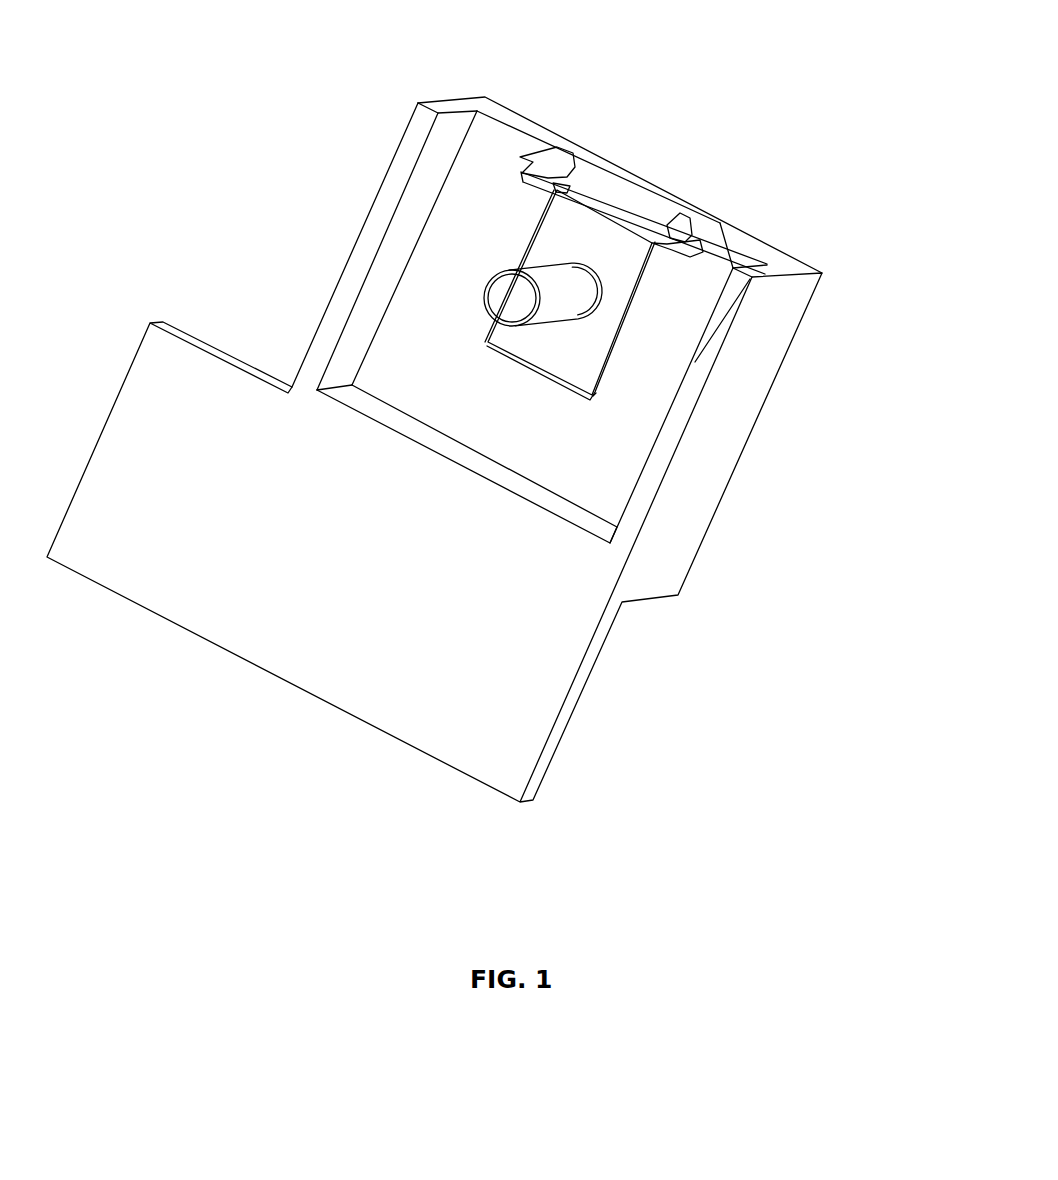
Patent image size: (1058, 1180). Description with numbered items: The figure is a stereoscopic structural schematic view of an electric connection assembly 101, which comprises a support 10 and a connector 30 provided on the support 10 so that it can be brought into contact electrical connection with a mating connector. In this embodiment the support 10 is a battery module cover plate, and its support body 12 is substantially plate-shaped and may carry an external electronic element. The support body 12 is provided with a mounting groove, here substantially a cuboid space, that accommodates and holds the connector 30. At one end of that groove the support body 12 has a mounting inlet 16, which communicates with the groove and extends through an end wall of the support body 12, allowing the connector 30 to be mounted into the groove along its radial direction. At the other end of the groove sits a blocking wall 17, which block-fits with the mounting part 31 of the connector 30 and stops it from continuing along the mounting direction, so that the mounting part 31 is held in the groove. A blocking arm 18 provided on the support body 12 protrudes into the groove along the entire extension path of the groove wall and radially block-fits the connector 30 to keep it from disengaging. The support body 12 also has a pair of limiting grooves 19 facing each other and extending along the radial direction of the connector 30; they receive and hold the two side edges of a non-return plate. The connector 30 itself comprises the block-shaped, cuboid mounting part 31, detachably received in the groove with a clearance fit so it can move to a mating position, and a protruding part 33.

The electric connection assembly 101 is at (406, 63).
The support 10 is at (845, 45).
The support body 12 is at (767, 268).
The mounting inlet 16 is at (630, 180).
The blocking wall 17 is at (593, 396).
The blocking arm 18 is at (580, 185).
The limiting groove 19 is at (552, 178).
The connector 30 is at (287, 127).
The mounting part 31 is at (558, 217).
The protruding part 33 is at (505, 300).